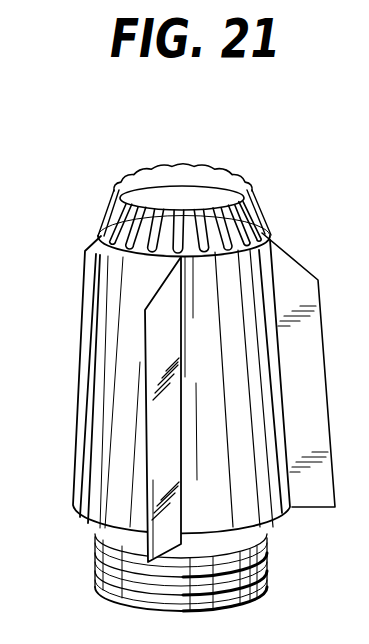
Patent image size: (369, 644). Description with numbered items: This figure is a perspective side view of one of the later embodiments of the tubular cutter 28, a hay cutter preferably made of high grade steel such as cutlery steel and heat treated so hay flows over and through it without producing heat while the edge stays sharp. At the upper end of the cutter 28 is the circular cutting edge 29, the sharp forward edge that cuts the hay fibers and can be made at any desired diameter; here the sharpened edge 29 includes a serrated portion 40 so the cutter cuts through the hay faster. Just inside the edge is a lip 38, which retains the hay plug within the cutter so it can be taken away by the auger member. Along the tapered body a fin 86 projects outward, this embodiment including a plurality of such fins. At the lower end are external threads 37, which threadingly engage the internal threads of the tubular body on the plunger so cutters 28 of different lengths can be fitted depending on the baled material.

The cutter 28 is at (64, 199).
The cutting edge 29 is at (234, 196).
The external threads 37 is at (270, 562).
The lip 38 is at (177, 187).
The serrated portion 40 is at (228, 233).
The fin 86 is at (294, 260).